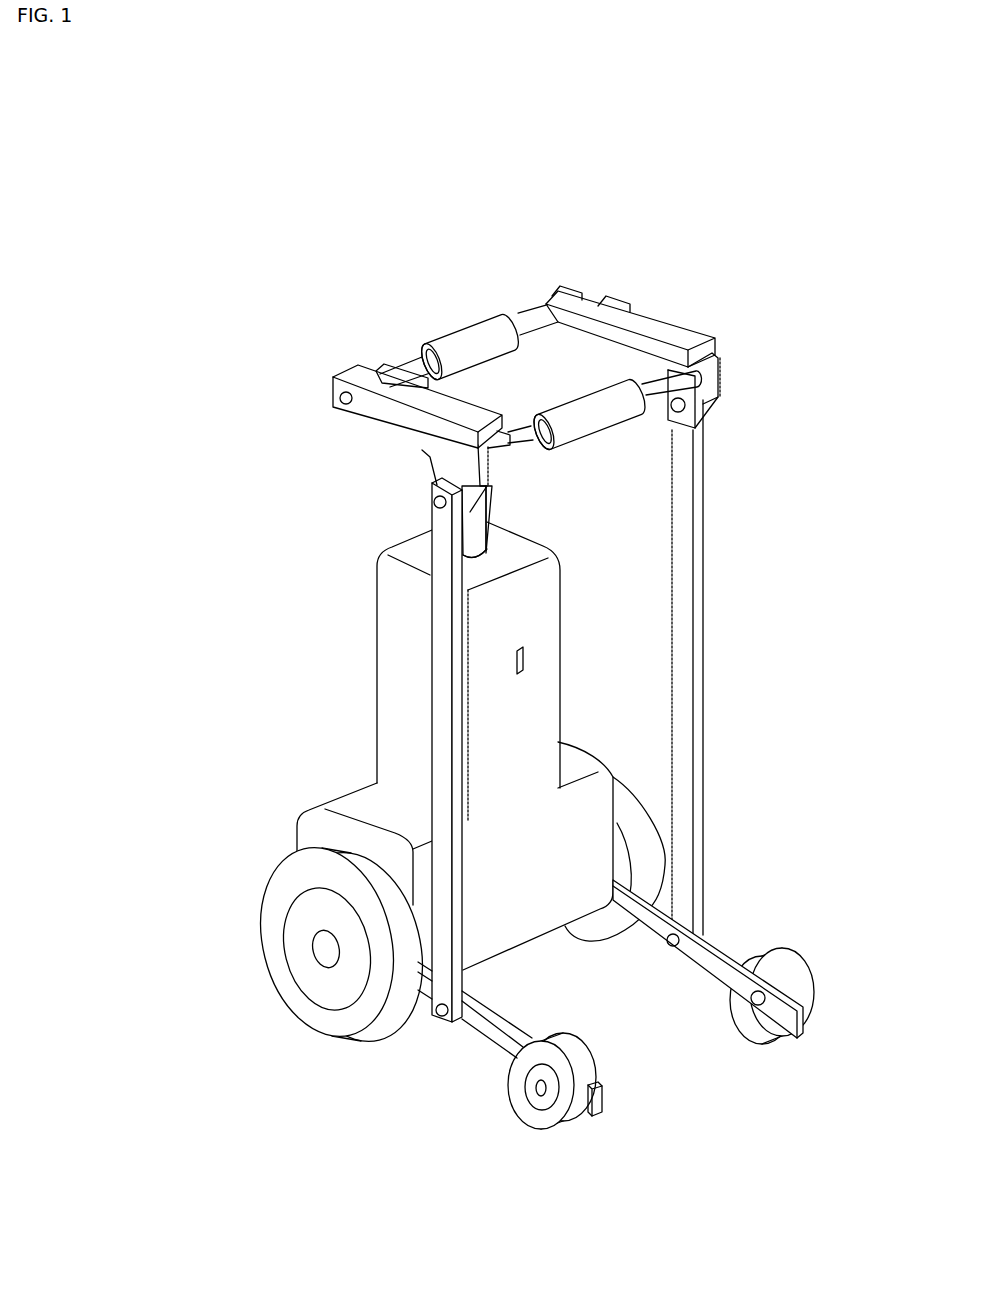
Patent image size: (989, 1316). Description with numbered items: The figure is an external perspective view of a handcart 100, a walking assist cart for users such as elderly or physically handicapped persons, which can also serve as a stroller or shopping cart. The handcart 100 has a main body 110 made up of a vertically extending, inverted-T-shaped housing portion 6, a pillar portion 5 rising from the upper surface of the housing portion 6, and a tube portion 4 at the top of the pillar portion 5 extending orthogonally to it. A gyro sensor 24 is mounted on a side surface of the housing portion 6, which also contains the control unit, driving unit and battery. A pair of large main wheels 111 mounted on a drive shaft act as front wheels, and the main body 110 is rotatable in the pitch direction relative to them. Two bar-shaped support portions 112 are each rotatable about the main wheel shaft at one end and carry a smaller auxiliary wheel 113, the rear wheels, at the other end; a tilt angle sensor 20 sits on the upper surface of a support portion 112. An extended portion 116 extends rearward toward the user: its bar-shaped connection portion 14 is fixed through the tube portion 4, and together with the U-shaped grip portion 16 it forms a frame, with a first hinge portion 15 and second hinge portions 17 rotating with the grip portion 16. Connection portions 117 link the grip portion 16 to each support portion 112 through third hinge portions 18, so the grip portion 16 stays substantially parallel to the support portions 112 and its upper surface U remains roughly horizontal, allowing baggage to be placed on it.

The handcart 100 is at (310, 291).
The main body 110 is at (262, 563).
The tube portion 4 is at (467, 347).
The pillar portion 5 is at (470, 542).
The housing portion 6 is at (392, 668).
The extended portion 116 is at (524, 327).
The connection portion 14 is at (542, 323).
The first hinge portion 15 is at (352, 377).
The grip portion 16 is at (495, 425).
The second hinge portions 17 is at (440, 498).
The connection portions 117 is at (440, 627).
The gyro sensor 24 is at (527, 660).
The main wheels 111 is at (633, 803).
The support portions 112 is at (493, 1038).
The auxiliary wheels 113 is at (548, 1120).
The third hinge portion 18 is at (435, 1022).
The tilt angle sensor 20 is at (593, 1085).
The upper surface U is at (697, 338).